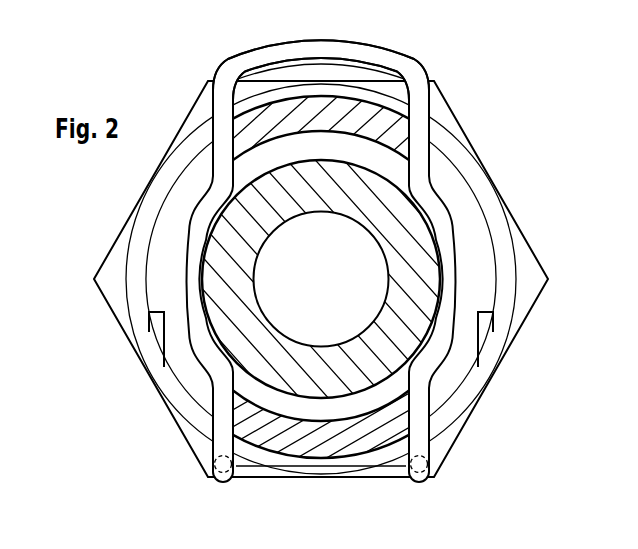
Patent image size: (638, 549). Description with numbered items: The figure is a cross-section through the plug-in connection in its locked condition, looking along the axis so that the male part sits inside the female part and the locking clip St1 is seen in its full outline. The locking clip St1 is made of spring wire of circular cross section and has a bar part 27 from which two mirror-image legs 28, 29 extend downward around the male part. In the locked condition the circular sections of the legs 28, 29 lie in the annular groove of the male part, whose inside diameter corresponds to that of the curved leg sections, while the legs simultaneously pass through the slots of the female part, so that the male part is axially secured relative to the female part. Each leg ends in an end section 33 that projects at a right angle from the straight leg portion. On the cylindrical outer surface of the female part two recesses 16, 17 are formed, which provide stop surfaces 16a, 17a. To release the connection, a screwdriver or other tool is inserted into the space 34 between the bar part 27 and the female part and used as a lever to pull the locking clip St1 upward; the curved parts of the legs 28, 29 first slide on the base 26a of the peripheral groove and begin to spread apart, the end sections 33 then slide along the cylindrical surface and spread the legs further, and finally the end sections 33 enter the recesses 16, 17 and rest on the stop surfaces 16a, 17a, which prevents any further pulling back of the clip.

The recess 16 is at (148, 330).
The stop surface 16a is at (156, 331).
The recess 17 is at (481, 340).
The stop surface 17a is at (490, 331).
The base of the peripheral groove 26a is at (430, 140).
The bar part 27 is at (334, 47).
The leg 28 is at (183, 283).
The leg 29 is at (437, 228).
The end section 33 is at (223, 487).
The space 34 is at (288, 72).
The locking clip St1 is at (424, 372).